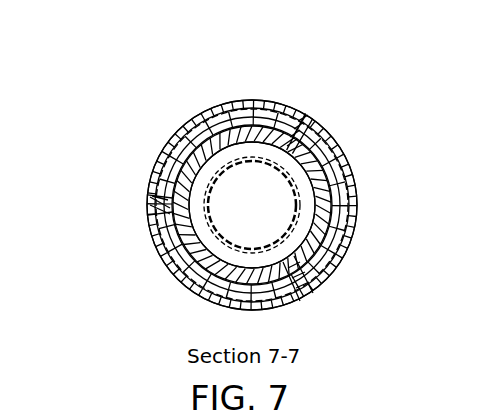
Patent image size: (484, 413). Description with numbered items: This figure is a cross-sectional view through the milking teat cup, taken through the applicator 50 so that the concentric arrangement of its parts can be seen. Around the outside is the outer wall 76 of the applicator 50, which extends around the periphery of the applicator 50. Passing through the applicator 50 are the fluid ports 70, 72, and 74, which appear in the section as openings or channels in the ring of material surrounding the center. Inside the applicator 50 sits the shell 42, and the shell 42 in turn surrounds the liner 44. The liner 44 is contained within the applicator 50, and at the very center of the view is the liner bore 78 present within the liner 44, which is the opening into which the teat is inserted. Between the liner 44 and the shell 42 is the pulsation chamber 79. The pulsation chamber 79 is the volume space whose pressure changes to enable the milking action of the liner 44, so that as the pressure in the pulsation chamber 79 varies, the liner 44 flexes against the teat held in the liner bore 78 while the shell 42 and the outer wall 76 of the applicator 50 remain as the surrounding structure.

The applicator 50 is at (218, 104).
The shell 42 is at (153, 176).
The liner 44 is at (150, 228).
The fluid port 70 is at (287, 274).
The fluid port 72 is at (298, 118).
The fluid port 74 is at (162, 211).
The outer wall 76 is at (168, 133).
The liner bore 78 is at (262, 197).
The pulsation chamber 79 is at (330, 267).